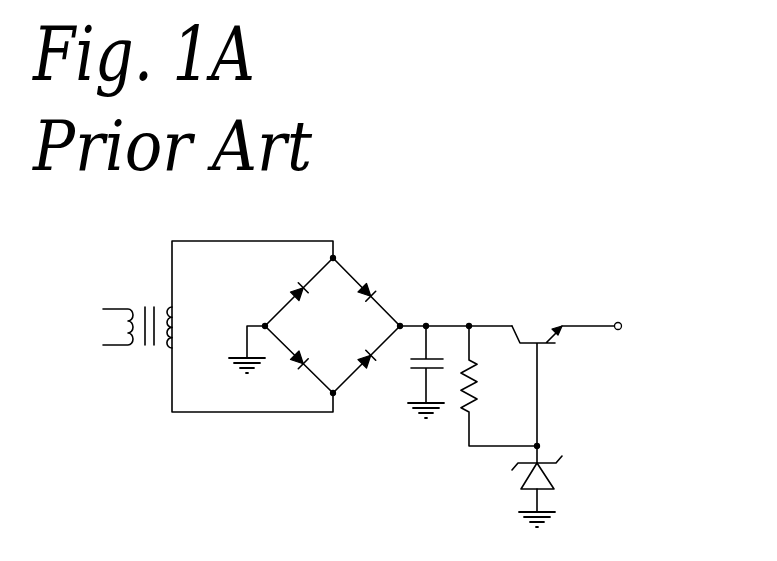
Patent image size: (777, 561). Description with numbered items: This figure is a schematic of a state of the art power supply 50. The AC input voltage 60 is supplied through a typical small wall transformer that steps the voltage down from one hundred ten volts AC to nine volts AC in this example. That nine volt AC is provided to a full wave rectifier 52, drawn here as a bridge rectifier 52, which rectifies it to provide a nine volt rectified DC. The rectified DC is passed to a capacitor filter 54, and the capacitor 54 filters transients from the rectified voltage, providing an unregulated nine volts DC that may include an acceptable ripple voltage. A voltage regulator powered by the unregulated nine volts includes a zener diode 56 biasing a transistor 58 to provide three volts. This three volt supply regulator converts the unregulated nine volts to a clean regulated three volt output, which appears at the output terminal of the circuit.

The power supply 50 is at (200, 468).
The full wave rectifier 52 is at (341, 390).
The capacitor filter 54 is at (417, 369).
The zener diode 56 is at (554, 469).
The transistor 58 is at (537, 341).
The AC input voltage 60 is at (102, 324).